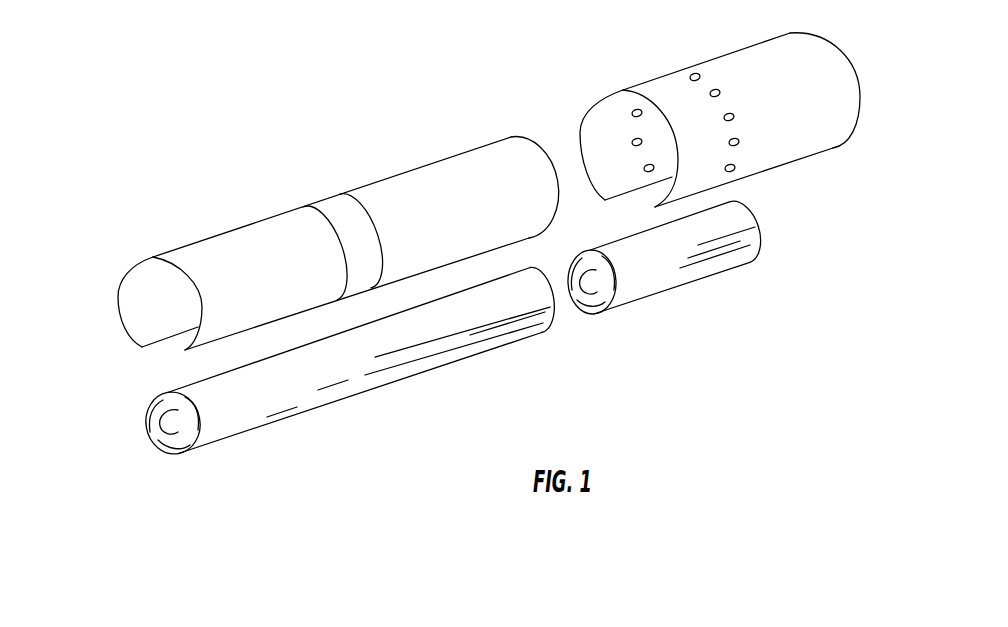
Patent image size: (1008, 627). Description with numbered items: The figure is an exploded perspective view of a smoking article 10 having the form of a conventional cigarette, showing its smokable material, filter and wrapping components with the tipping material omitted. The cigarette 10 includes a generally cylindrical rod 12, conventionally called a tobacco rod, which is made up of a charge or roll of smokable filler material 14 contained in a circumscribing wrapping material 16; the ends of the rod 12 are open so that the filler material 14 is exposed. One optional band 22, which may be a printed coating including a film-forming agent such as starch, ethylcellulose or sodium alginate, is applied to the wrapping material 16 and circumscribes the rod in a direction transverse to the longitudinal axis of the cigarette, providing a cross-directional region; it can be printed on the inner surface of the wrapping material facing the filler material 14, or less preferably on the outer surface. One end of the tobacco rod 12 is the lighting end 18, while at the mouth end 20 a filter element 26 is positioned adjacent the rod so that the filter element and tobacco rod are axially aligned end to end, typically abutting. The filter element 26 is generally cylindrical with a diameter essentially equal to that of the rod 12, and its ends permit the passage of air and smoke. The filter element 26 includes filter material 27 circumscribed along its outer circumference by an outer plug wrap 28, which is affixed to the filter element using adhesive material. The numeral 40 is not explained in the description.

The smoking article 10 is at (607, 377).
The cylindrical rod 12 is at (252, 488).
The smokable filler material 14 is at (280, 407).
The wrapping material 16 is at (498, 157).
The lighting end 18 is at (132, 433).
The mouth end 20 is at (770, 217).
The band 22 is at (320, 200).
The filter element 26 is at (770, 298).
The filter material 27 is at (658, 280).
The outer plug wrap 28 is at (750, 73).
The perforations 40 is at (738, 145).